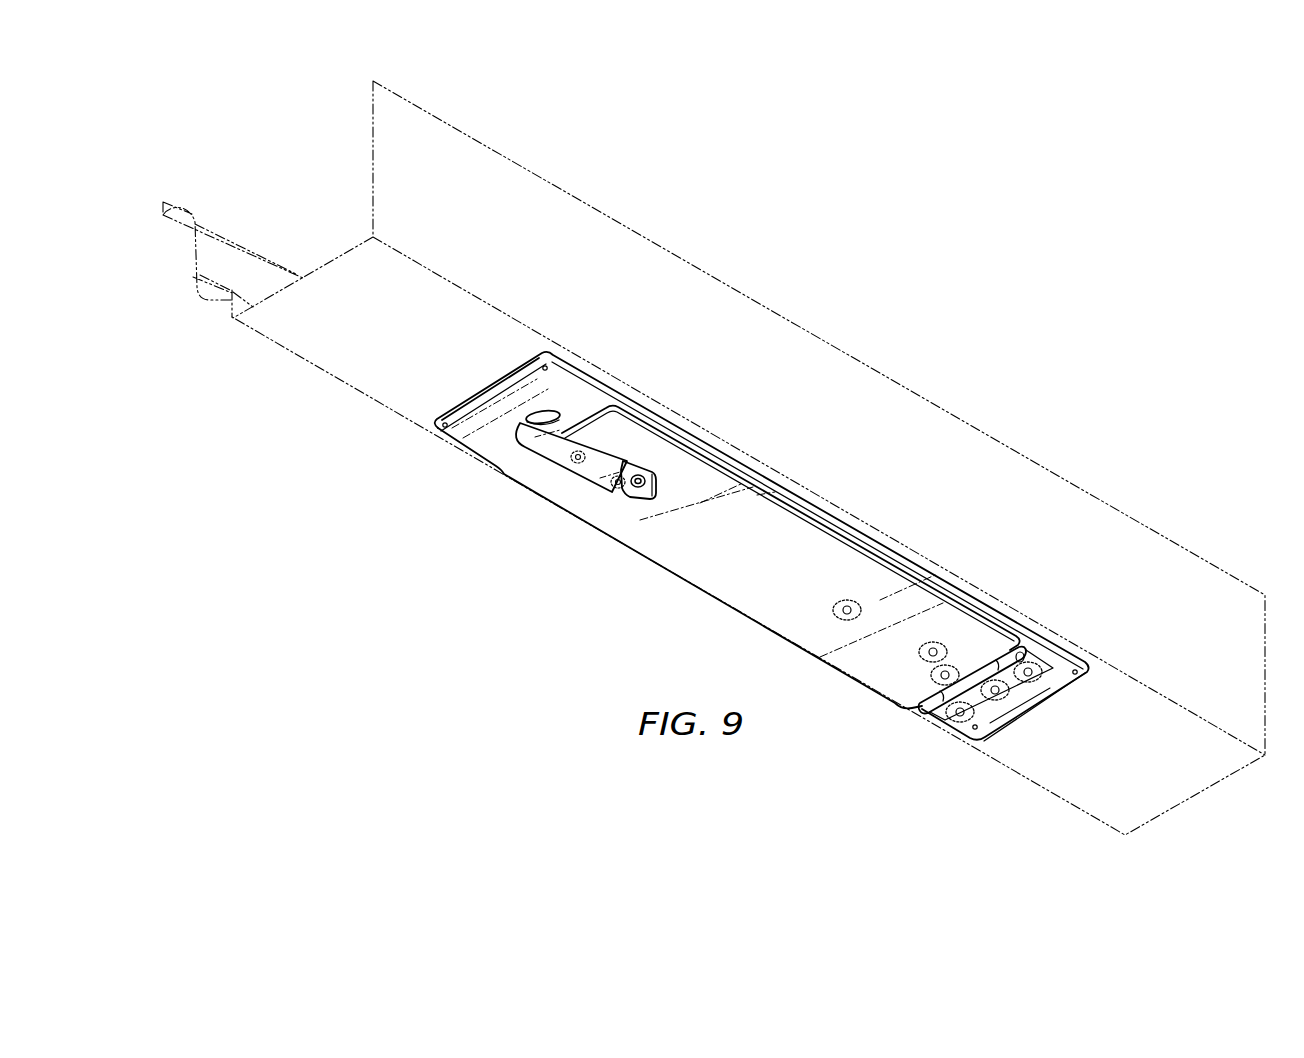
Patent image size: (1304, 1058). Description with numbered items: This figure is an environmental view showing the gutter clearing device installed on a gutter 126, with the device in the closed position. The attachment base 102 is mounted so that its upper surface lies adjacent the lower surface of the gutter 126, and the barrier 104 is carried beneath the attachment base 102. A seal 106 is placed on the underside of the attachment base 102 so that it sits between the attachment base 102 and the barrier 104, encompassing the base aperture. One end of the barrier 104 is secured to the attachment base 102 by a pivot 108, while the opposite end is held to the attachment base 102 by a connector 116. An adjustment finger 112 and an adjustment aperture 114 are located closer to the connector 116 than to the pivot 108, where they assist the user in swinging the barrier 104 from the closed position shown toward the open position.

The attachment base 102 is at (592, 392).
The barrier 104 is at (773, 512).
The seal 106 is at (483, 444).
The pivot 108 is at (1020, 657).
The adjustment finger 112 is at (635, 490).
The adjustment aperture 114 is at (643, 497).
The connector 116 is at (541, 412).
The gutter 126 is at (513, 175).